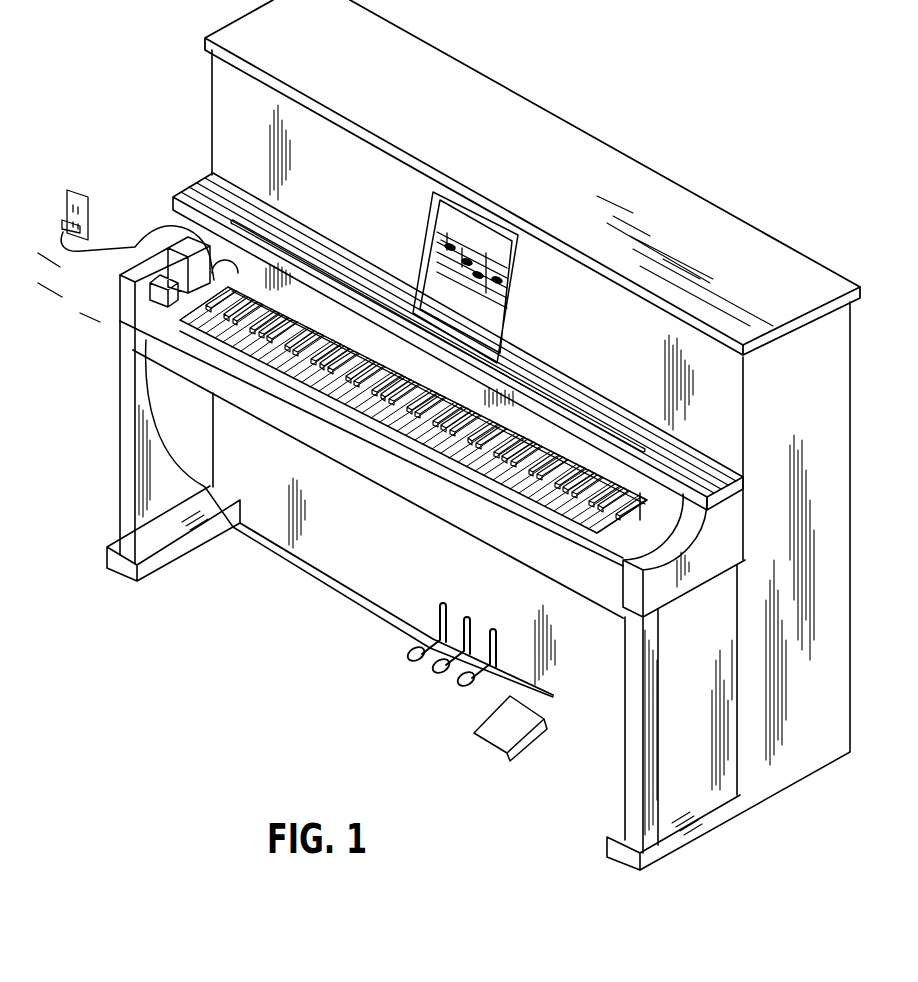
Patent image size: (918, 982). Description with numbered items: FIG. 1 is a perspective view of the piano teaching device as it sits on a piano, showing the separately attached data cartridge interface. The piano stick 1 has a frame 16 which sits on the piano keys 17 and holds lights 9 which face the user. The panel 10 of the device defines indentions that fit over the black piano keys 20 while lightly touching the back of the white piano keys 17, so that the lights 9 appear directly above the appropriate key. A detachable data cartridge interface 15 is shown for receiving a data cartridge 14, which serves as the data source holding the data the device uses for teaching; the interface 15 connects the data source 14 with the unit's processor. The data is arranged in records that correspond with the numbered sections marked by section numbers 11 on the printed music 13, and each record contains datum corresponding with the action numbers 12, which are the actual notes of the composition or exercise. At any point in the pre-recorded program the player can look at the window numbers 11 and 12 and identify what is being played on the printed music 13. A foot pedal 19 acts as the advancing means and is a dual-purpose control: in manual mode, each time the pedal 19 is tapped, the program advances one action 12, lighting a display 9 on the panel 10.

The piano stick 1 is at (420, 390).
The lights 9 is at (607, 500).
The panel 10 is at (558, 450).
The section numbers 11 is at (492, 233).
The action numbers 12 is at (455, 298).
The printed music 13 is at (417, 287).
The data cartridge 14 is at (115, 291).
The data cartridge interface 15 is at (180, 280).
The frame 16 is at (357, 354).
The piano keys 17 is at (400, 442).
The foot pedal 19 is at (487, 724).
The black piano keys 20 is at (520, 440).